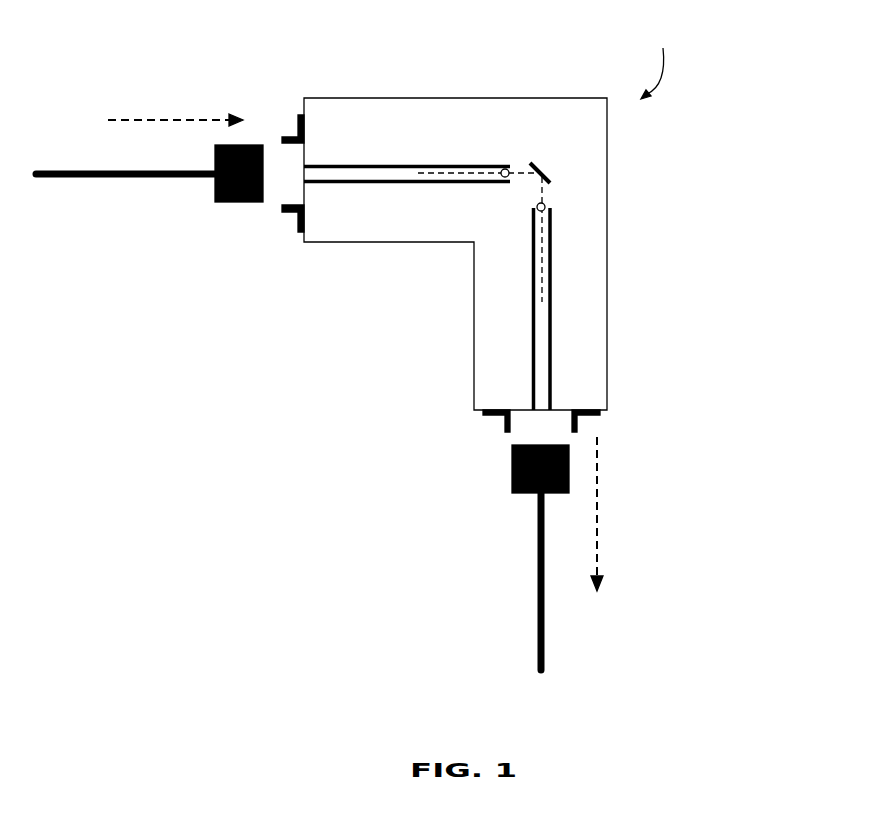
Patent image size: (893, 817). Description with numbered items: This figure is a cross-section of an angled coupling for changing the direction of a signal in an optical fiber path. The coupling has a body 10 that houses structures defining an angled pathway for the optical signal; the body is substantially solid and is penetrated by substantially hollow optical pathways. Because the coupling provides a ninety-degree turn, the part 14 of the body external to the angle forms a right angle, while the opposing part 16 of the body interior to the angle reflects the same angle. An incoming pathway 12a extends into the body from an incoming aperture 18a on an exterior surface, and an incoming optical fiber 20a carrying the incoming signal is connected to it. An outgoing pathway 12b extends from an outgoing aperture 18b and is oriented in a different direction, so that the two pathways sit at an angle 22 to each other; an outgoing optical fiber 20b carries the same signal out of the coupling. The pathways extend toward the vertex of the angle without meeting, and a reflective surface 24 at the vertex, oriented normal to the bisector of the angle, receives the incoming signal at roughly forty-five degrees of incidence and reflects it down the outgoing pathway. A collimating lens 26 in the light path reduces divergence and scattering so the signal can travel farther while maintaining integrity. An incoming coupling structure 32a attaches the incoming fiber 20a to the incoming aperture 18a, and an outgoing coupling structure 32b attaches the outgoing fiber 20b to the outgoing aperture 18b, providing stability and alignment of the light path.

The body 10 is at (659, 61).
The incoming pathway 12a is at (372, 165).
The outgoing pathway 12b is at (552, 348).
The part of the body external to the angle 14 is at (555, 113).
The opposing part of the body 16 is at (408, 220).
The incoming aperture 18a is at (302, 171).
The outgoing aperture 18b is at (530, 412).
The incoming optical fiber 20a is at (142, 177).
The outgoing optical fiber 20b is at (537, 538).
The angle 22 is at (523, 177).
The reflective surface 24 is at (551, 182).
The collimating lens 26 is at (506, 168).
The incoming coupling structure 32a is at (300, 222).
The outgoing coupling structure 32b is at (587, 417).